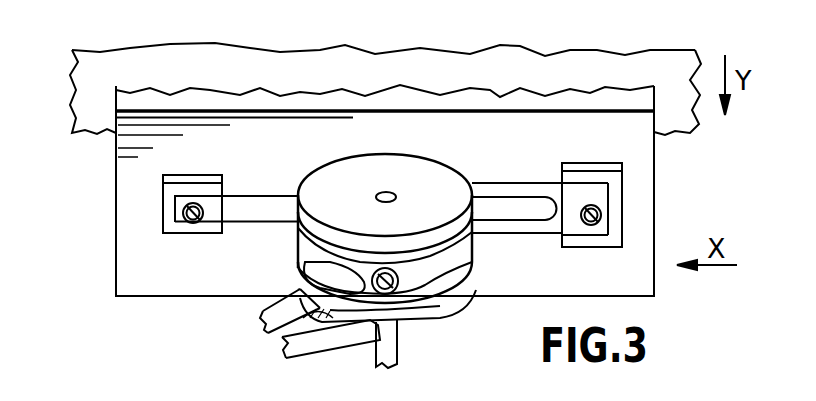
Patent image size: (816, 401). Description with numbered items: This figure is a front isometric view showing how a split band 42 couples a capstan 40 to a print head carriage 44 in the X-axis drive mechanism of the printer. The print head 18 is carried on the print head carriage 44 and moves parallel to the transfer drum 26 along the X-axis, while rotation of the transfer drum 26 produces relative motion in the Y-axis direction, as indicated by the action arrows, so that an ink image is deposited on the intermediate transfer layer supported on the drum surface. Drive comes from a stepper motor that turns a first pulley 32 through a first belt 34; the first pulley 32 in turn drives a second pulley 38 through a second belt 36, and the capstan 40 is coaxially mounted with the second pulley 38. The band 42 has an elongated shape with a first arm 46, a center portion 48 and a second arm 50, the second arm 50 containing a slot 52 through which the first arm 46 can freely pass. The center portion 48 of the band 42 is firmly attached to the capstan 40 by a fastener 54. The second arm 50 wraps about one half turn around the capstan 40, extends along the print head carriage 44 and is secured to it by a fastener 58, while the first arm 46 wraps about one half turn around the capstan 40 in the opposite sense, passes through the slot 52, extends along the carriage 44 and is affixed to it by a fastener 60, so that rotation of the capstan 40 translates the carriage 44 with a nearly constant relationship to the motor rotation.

The print head 18 is at (157, 98).
The transfer drum 26 is at (658, 64).
The first pulley 32 is at (228, 0).
The first belt 34 is at (387, 6).
The second belt 36 is at (262, 320).
The second pulley 38 is at (307, 333).
The capstan 40 is at (332, 178).
The split band 42 is at (447, 269).
The print head carriage 44 is at (130, 172).
The first arm 46 is at (252, 204).
The center portion 48 is at (358, 296).
The second arm 50 is at (530, 192).
The slot 52 is at (498, 206).
The fastener 54 is at (385, 268).
The fastener 58 is at (591, 226).
The fastener 60 is at (191, 224).